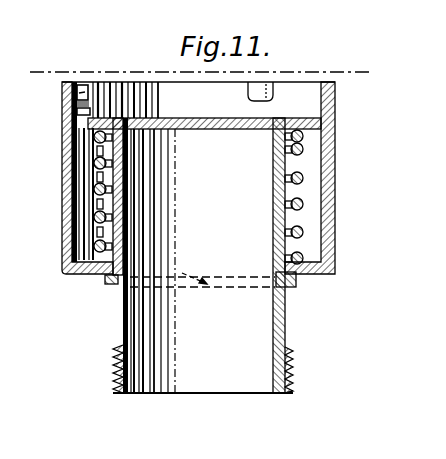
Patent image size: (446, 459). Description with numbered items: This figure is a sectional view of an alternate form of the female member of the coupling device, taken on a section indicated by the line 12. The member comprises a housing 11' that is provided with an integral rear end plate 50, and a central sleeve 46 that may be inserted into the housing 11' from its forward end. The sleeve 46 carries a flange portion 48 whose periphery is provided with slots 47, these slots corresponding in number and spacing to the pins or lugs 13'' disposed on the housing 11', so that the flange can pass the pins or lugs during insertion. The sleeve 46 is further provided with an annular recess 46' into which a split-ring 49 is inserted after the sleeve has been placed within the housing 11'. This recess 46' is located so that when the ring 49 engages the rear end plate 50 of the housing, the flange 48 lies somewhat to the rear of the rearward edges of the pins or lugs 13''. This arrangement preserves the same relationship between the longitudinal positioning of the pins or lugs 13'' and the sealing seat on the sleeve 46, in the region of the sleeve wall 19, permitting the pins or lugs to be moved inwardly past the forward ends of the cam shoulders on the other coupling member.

The housing 11' is at (223, 178).
The section line 12 is at (38, 52).
The pins or lugs 13'' is at (55, 102).
The tube 19 is at (133, 117).
The central sleeve 46 is at (203, 255).
The annular recess 46' is at (179, 337).
The slots 47 is at (67, 142).
The flange portion 48 is at (288, 118).
The split-ring 49 is at (110, 280).
The rear end plate 50 is at (292, 282).